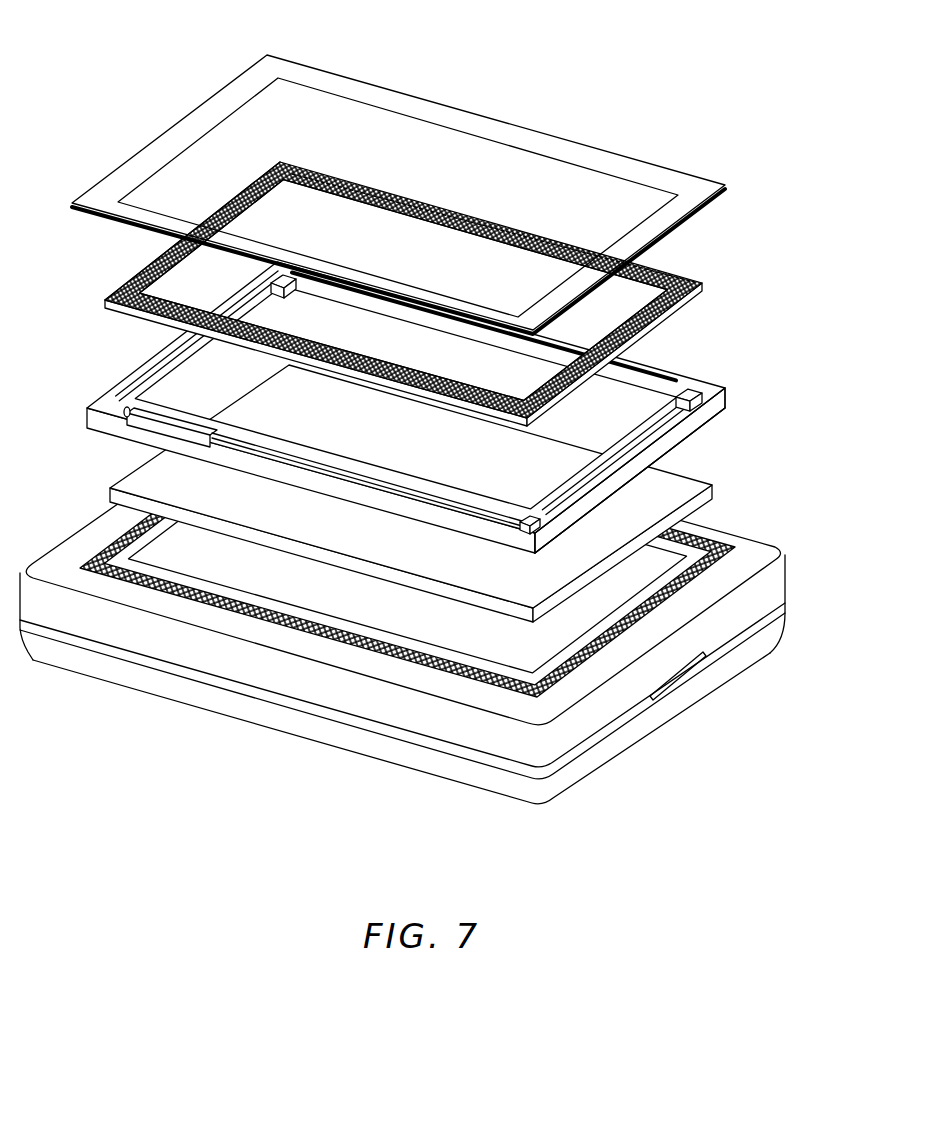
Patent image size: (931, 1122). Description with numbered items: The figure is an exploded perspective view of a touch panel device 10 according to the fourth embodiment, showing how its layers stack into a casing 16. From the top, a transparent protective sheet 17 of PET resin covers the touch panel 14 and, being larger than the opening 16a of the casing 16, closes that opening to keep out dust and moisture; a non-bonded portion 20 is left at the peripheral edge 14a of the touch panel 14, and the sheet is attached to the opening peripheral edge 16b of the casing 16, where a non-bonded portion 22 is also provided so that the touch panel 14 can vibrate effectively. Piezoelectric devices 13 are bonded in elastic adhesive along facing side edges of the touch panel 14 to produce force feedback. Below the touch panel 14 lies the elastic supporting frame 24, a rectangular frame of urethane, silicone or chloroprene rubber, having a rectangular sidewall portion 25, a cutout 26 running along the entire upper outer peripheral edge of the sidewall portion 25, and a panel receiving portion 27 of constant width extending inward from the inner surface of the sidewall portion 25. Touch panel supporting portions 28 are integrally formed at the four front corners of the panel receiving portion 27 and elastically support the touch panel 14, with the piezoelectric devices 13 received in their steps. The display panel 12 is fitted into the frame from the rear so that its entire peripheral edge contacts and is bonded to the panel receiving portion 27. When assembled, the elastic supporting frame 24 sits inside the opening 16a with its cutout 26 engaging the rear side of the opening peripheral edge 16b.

The touch panel device 10 is at (492, 93).
The display panel 12 is at (706, 484).
The piezoelectric device 13 is at (465, 213).
The touch panel 14 is at (657, 287).
The peripheral edge of the touch panel 14a is at (640, 380).
The casing 16 is at (745, 553).
The opening of the casing 16a is at (210, 597).
The opening peripheral edge of the casing 16b is at (110, 542).
The transparent protective sheet 17 is at (428, 115).
The non-bonded portion 20 is at (143, 267).
The non-bonded portion 22 is at (683, 587).
The elastic supporting frame 24 is at (668, 362).
The sidewall portion 25 is at (717, 407).
The cutout 26 is at (685, 428).
The panel receiving portion 27 is at (663, 370).
The touch panel supporting portions 28 is at (698, 383).